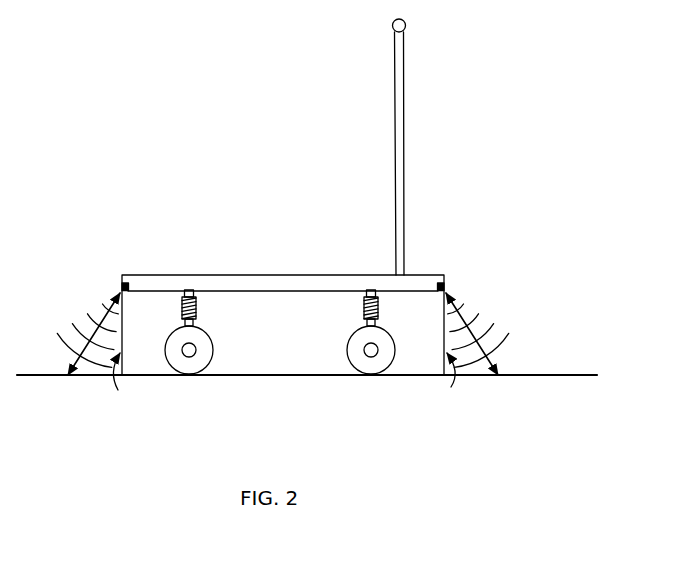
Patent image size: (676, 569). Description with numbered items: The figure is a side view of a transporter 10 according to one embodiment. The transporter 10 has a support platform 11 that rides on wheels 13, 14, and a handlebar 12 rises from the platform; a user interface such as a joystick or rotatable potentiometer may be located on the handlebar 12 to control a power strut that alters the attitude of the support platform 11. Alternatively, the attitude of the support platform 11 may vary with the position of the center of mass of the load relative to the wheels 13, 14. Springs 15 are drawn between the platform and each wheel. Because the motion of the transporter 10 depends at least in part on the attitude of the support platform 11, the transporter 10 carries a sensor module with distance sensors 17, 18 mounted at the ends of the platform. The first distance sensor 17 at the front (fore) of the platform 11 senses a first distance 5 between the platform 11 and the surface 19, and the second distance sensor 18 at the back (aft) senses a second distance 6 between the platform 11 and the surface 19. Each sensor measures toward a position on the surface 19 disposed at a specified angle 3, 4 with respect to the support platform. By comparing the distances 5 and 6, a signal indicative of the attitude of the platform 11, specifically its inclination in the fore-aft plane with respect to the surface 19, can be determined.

The transporter 10 is at (487, 179).
The support platform 11 is at (230, 283).
The handlebar 12 is at (405, 61).
The wheel 13 is at (208, 365).
The wheel 14 is at (352, 368).
The suspension spring 15 is at (182, 307).
The first distance sensor 17 is at (447, 284).
The second distance sensor 18 is at (121, 287).
The specified angle 3 is at (125, 379).
The specified angle 4 is at (442, 377).
The first distance 5 is at (511, 366).
The second distance 6 is at (66, 363).
The surface 19 is at (592, 375).